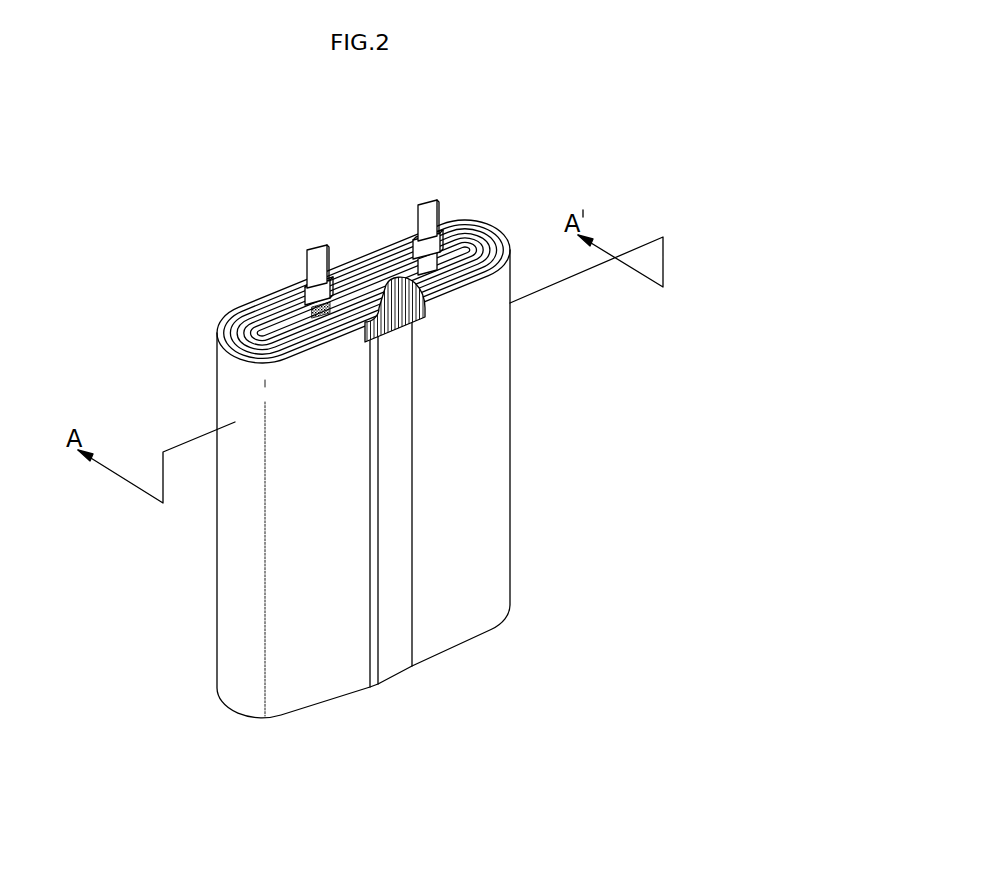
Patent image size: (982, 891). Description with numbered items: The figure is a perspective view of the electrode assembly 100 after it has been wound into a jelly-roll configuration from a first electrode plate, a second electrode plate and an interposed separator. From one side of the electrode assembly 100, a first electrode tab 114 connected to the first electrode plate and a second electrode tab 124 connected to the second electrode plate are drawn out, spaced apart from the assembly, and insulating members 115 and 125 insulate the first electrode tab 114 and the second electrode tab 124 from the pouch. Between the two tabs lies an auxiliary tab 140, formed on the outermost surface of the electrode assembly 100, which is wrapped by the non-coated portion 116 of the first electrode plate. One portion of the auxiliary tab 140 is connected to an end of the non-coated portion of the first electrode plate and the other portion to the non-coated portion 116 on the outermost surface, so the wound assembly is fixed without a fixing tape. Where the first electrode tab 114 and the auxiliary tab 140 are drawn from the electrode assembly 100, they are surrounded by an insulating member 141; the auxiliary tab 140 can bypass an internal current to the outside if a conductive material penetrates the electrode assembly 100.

The electrode assembly 100 is at (406, 411).
The first electrode tab 114 is at (318, 255).
The insulating member 115 is at (302, 294).
The non-coated portion 116 is at (510, 540).
The second electrode tab 124 is at (432, 205).
The insulating member 125 is at (413, 242).
The auxiliary tab 140 is at (480, 478).
The insulating member 141 is at (425, 315).